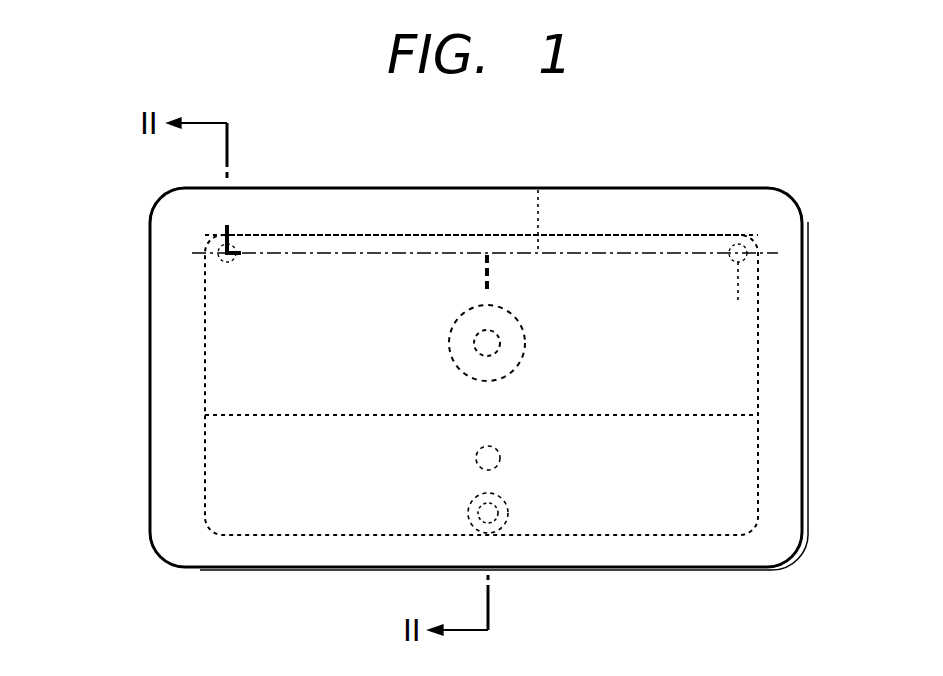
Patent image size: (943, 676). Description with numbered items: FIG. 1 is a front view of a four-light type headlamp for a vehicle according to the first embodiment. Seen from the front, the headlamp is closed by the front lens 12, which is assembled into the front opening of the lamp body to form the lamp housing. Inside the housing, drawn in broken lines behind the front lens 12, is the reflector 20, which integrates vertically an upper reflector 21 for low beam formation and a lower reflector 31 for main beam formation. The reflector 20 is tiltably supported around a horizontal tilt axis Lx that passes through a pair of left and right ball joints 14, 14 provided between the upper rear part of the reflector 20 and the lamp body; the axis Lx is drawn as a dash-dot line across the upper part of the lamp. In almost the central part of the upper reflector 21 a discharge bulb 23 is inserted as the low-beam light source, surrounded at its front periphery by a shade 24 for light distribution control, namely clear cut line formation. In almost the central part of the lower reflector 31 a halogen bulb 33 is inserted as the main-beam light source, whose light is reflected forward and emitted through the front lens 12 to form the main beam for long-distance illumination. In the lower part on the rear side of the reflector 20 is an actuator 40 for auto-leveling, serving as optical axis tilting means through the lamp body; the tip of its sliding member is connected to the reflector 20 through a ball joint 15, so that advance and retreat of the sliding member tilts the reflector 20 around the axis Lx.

The front lens 12 is at (176, 282).
The ball joint 14 is at (237, 233).
The ball joint 15 is at (497, 530).
The reflector 20 is at (83, 327).
The reflector for low beam formation 21 is at (236, 353).
The discharge bulb 23 is at (450, 323).
The shade 24 is at (525, 322).
The reflector for main beam formation 31 is at (236, 481).
The halogen bulb 33 is at (477, 455).
The actuator 40 is at (508, 513).
The horizontal tilt axis Lx is at (538, 188).